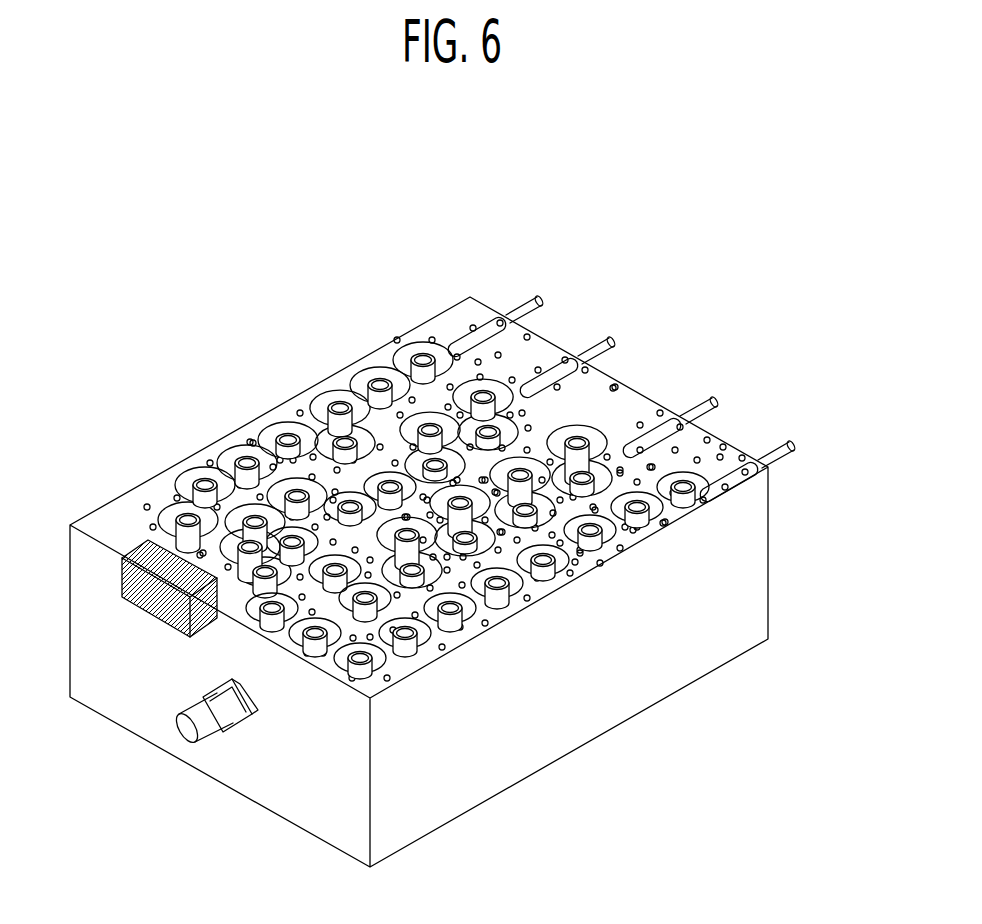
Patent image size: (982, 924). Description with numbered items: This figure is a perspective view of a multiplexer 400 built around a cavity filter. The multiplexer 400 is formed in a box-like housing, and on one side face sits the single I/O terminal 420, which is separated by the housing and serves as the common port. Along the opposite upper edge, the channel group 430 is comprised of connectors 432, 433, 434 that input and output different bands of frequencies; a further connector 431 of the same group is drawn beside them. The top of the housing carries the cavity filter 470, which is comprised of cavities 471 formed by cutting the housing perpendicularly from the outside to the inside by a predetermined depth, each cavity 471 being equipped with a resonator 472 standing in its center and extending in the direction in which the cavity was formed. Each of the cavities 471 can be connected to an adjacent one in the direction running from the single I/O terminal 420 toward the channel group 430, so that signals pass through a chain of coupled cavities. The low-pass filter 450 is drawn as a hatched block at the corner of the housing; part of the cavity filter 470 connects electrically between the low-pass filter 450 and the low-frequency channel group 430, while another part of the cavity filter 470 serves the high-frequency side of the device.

The multiplexer 400 is at (222, 283).
The single I/O terminal 420 is at (187, 732).
The channel group 430 is at (657, 357).
The first terminal 431 is at (540, 303).
The connector 432 is at (610, 345).
The connector 433 is at (713, 408).
The connector 434 is at (783, 436).
The low-pass filter 450 is at (158, 610).
The cavity filter 470 is at (477, 563).
The cavity 471 is at (650, 543).
The resonator 472 is at (610, 527).